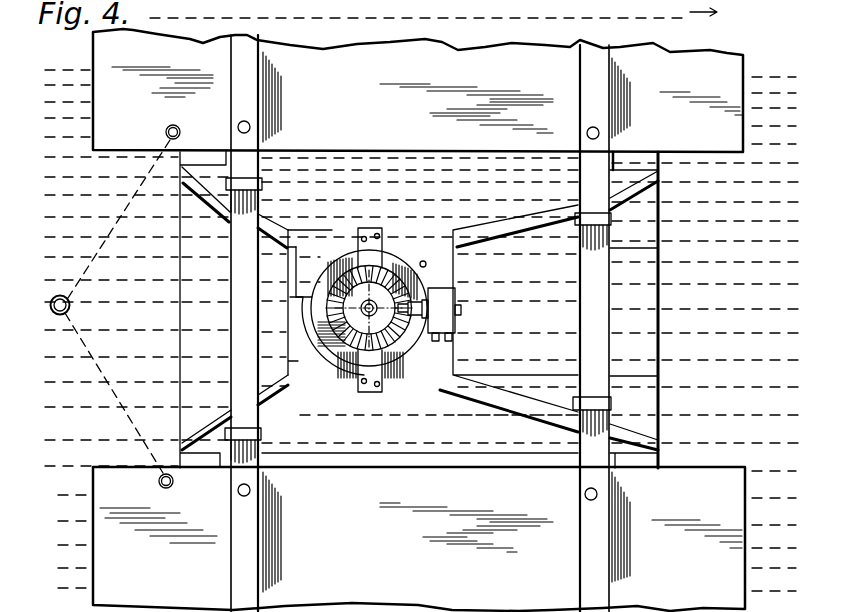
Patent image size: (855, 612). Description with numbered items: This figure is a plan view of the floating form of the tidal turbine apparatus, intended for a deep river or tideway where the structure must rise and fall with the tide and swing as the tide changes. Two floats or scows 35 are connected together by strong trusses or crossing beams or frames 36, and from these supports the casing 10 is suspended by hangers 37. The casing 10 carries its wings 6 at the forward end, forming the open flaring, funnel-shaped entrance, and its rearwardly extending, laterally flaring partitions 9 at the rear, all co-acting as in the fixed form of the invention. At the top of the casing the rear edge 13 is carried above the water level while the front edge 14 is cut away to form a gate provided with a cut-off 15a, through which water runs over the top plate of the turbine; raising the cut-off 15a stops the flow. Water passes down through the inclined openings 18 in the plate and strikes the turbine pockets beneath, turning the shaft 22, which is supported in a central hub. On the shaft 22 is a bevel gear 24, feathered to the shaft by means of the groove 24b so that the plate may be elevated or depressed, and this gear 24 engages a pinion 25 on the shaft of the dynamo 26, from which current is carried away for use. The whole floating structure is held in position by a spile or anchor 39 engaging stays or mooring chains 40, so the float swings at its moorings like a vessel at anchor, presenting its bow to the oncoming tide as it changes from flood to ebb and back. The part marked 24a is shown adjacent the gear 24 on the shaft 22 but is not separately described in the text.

The floats or scows 35 is at (419, 320).
The trusses or crossing beams or frames 36 is at (606, 158).
The hangers 37 is at (263, 185).
The vertical wings 6 is at (234, 309).
The partitions 9 is at (562, 213).
The stays or mooring chains 40 is at (122, 401).
The spile or anchor 39 is at (73, 304).
The cut-off 15a is at (289, 263).
The front edge 14 is at (286, 302).
The inclined openings 18 is at (337, 262).
The shaft 22 is at (373, 300).
The upper strap 24a is at (370, 258).
The bevel gear 24 is at (372, 392).
The rear edge 13 is at (434, 255).
The pinion 25 is at (431, 292).
The dynamo 26 is at (448, 326).
The groove 24b is at (380, 313).
The casing 10 is at (327, 336).